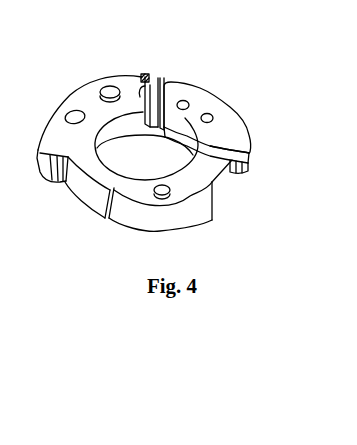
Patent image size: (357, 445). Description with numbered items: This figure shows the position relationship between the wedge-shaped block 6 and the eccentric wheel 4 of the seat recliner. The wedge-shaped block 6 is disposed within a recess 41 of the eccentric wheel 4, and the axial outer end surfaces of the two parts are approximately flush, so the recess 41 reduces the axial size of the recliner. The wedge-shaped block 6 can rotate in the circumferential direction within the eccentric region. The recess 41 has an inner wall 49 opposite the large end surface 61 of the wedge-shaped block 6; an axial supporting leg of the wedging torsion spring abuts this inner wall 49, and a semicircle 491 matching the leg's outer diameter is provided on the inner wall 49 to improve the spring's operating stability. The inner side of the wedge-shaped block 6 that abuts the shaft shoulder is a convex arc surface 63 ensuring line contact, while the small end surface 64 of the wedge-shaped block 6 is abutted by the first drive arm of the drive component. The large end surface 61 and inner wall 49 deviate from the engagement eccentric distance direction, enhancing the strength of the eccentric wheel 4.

The eccentric wheel 4 is at (73, 95).
The semicircle 491 is at (140, 76).
The inner wall 49 is at (150, 97).
The recess 41 is at (156, 113).
The large end surface 61 is at (163, 117).
The wedge-shaped block 6 is at (198, 103).
The convex arc surface 63 is at (198, 130).
The small end surface 64 is at (240, 172).